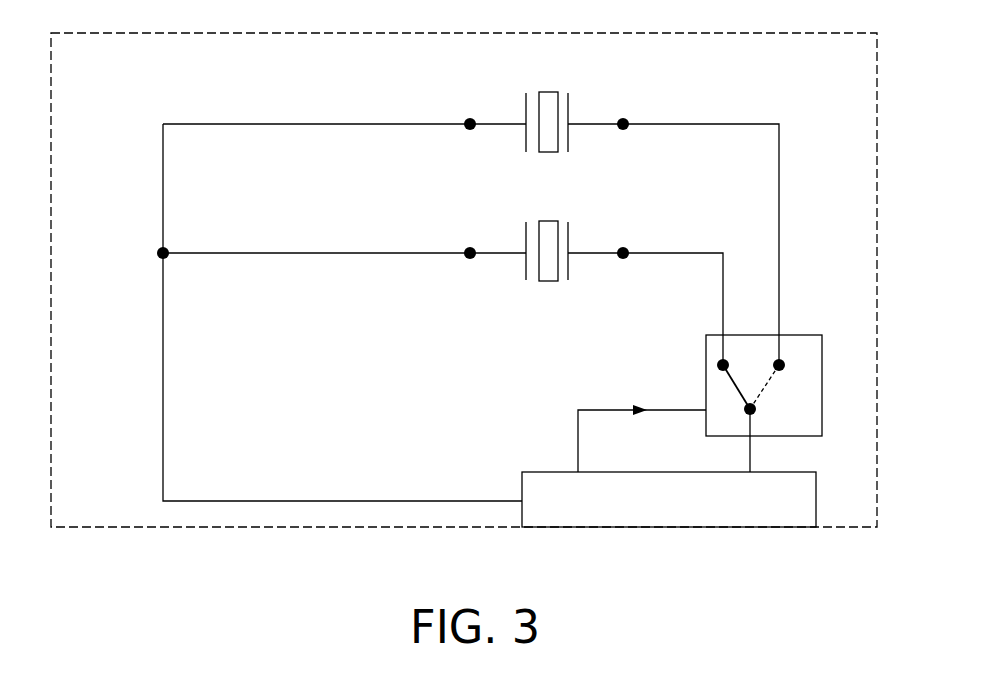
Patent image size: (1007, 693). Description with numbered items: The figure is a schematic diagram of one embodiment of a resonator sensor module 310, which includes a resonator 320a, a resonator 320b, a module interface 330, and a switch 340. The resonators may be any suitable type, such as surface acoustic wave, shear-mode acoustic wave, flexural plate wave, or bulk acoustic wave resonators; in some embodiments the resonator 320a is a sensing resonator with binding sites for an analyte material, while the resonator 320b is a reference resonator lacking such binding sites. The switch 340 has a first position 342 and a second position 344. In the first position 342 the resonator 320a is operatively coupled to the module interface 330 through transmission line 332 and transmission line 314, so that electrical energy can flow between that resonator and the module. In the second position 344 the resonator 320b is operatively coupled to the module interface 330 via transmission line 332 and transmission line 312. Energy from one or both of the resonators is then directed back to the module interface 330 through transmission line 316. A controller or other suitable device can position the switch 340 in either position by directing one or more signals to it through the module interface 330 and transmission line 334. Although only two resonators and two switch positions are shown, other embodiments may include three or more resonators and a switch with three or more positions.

The module 310 is at (122, 558).
The transmission line 312 is at (779, 170).
The transmission line 314 is at (679, 252).
The transmission line 316 is at (163, 369).
The resonator 320a is at (583, 207).
The resonator 320b is at (575, 72).
The module interface 330 is at (655, 532).
The transmission line 332 is at (750, 455).
The transmission line 334 is at (578, 428).
The switch 340 is at (822, 382).
The first position 342 is at (739, 387).
The second position 344 is at (762, 390).